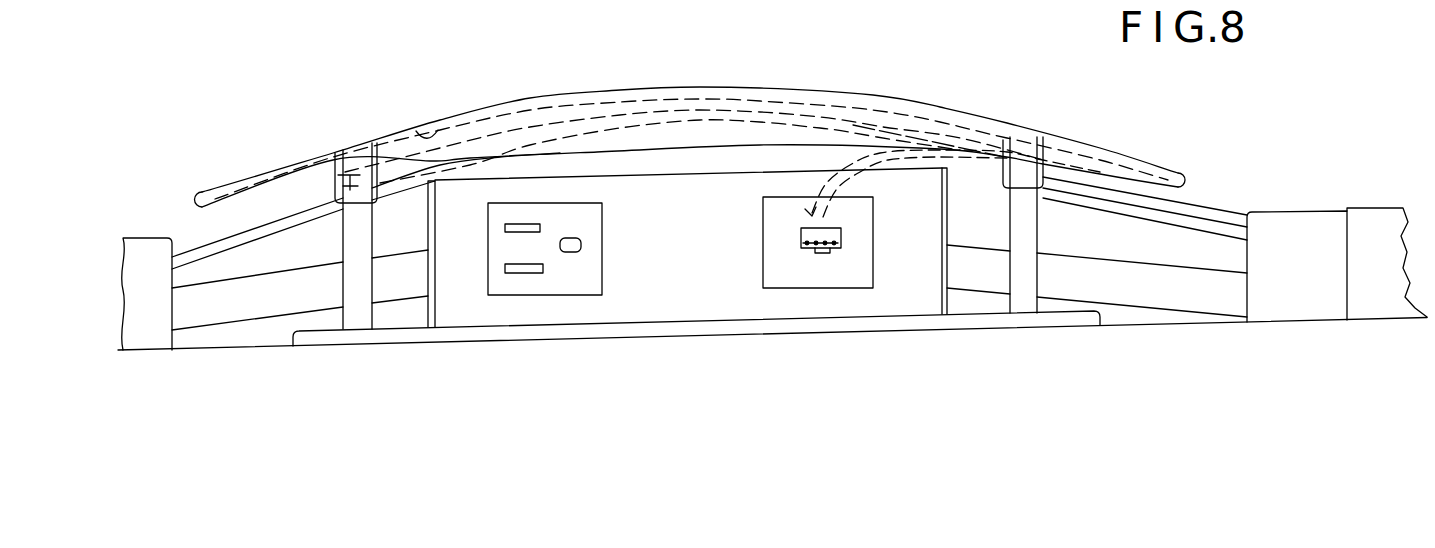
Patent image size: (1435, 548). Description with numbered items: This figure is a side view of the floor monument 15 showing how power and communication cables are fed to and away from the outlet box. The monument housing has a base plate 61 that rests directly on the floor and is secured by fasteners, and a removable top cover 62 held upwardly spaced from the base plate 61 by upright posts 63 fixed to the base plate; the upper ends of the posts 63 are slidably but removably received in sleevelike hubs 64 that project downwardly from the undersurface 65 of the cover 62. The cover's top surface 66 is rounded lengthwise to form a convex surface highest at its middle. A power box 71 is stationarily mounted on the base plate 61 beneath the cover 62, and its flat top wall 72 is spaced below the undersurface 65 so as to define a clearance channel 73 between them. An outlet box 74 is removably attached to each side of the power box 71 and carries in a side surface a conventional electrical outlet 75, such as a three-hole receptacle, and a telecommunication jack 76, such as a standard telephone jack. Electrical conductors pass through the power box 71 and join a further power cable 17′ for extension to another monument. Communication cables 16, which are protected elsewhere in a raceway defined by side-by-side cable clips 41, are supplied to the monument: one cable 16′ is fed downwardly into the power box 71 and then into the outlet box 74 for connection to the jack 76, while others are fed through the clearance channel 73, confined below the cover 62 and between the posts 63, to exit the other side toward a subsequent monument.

The monument 15 is at (798, 85).
The communication cables 16 is at (1203, 227).
The communication cable 16′ is at (880, 142).
The further power cable 17′ is at (213, 313).
The cable clips 41 is at (138, 240).
The base plate 61 is at (741, 329).
The top cover 62 is at (485, 127).
The upright posts 63 is at (365, 320).
The sleevelike hubs 64 is at (353, 187).
The undersurface 65 is at (414, 128).
The top surface 66 is at (585, 60).
The power box 71 is at (1171, 299).
The top wall 72 is at (707, 175).
The clearance channel 73 is at (661, 158).
The outlet box 74 is at (684, 308).
The electrical outlet 75 is at (577, 287).
The telecommunication jack 76 is at (847, 278).